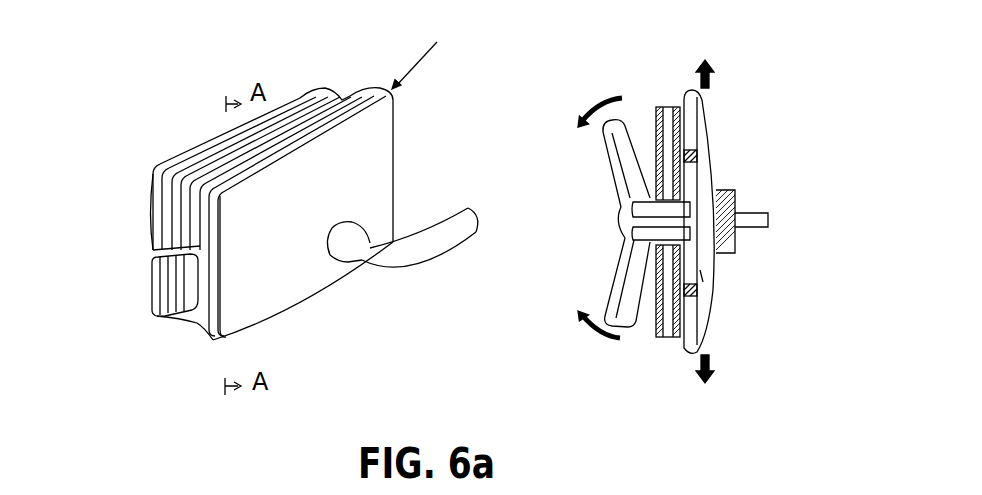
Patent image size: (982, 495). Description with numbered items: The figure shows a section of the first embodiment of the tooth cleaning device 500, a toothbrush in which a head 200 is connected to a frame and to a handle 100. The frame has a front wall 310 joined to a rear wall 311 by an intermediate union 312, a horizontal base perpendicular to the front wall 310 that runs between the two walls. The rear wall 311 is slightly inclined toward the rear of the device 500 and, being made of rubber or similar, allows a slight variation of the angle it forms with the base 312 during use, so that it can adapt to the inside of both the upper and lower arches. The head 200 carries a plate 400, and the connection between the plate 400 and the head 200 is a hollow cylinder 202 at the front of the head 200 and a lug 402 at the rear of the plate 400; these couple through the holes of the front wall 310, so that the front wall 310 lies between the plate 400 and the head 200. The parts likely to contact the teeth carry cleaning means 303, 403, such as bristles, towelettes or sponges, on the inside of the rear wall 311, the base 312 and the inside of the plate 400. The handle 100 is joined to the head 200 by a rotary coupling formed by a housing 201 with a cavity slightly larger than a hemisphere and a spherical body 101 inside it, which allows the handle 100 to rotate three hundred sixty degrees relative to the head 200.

The handle 100 is at (452, 252).
The spherical body 101 is at (348, 245).
The head 200 is at (362, 168).
The housing 201 is at (335, 228).
The hollow cylinder 202 is at (703, 282).
The means for cleaning the teeth 303 is at (175, 168).
The front wall 310 is at (201, 340).
The rear wall 311 is at (152, 210).
The intermediate union 312 is at (150, 268).
The plate 400 is at (150, 181).
The lug 402 is at (705, 293).
The means for cleaning 403 is at (360, 92).
The tooth cleaning device 500 is at (430, 52).